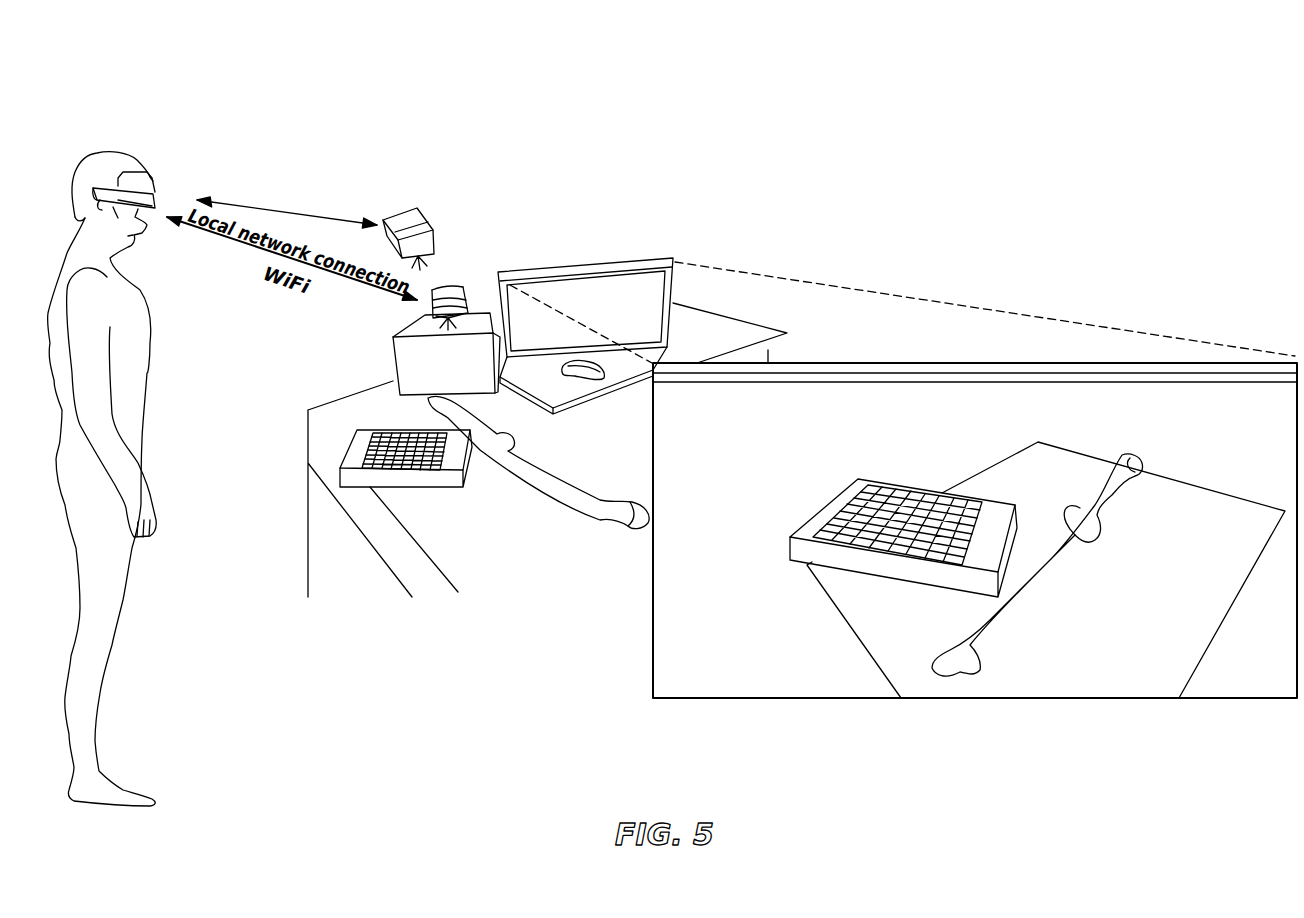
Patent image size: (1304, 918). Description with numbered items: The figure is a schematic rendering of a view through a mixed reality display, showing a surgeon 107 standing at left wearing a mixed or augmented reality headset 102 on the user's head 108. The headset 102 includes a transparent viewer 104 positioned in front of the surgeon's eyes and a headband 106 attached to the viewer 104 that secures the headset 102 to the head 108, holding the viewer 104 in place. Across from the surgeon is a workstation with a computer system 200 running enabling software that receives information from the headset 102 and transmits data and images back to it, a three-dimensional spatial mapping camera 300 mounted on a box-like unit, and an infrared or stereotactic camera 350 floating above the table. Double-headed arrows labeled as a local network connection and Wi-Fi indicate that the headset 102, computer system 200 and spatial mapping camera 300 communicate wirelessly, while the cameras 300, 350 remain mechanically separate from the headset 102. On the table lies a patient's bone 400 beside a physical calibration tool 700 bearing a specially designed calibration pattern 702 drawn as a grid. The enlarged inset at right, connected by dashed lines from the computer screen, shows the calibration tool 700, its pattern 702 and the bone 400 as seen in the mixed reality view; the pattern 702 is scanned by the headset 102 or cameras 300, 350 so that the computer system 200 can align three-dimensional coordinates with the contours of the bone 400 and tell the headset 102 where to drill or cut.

The surgeon 107 is at (55, 220).
The user's head 108 is at (75, 170).
The headband 106 is at (113, 207).
The mixed or augmented reality headset 102 is at (160, 200).
The transparent viewer 104 is at (162, 217).
The infrared or stereotactic camera 350 is at (413, 227).
The 3D spatial mapping camera 300 is at (452, 293).
The computer system 200 is at (593, 267).
The calibration tool 700 is at (358, 438).
The calibration pattern 702 is at (363, 457).
The bone 400 is at (525, 448).